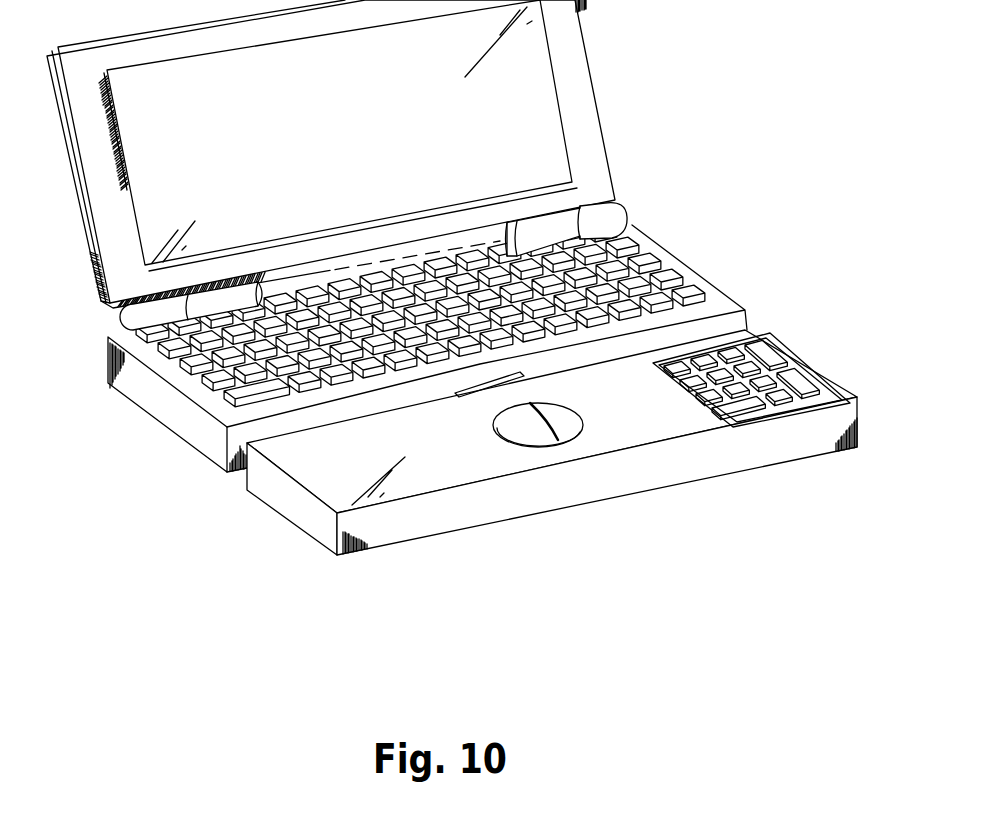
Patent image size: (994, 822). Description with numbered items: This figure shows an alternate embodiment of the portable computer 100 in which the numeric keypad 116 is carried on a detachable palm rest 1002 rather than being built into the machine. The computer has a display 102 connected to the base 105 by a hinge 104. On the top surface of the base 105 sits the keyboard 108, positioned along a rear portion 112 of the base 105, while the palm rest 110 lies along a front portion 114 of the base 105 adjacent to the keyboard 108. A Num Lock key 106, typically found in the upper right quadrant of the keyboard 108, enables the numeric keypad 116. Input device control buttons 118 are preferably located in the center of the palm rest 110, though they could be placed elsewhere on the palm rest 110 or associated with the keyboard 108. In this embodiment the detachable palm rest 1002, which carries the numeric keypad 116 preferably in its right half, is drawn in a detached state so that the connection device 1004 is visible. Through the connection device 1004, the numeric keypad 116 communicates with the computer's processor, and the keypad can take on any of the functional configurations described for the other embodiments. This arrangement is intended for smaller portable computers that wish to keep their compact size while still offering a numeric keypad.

The portable computer 100 is at (726, 114).
The display 102 is at (500, 67).
The hinge 104 is at (632, 209).
The base 105 is at (722, 291).
The Num Lock key 106 is at (391, 313).
The keyboard 108 is at (215, 365).
The palm rest 110 is at (217, 413).
The rear portion 112 is at (110, 335).
The front portion 114 is at (643, 481).
The numeric keypad 116 is at (762, 370).
The input device control buttons 118 is at (543, 403).
The detachable palm rest 1002 is at (523, 442).
The connection device 1004 is at (440, 400).